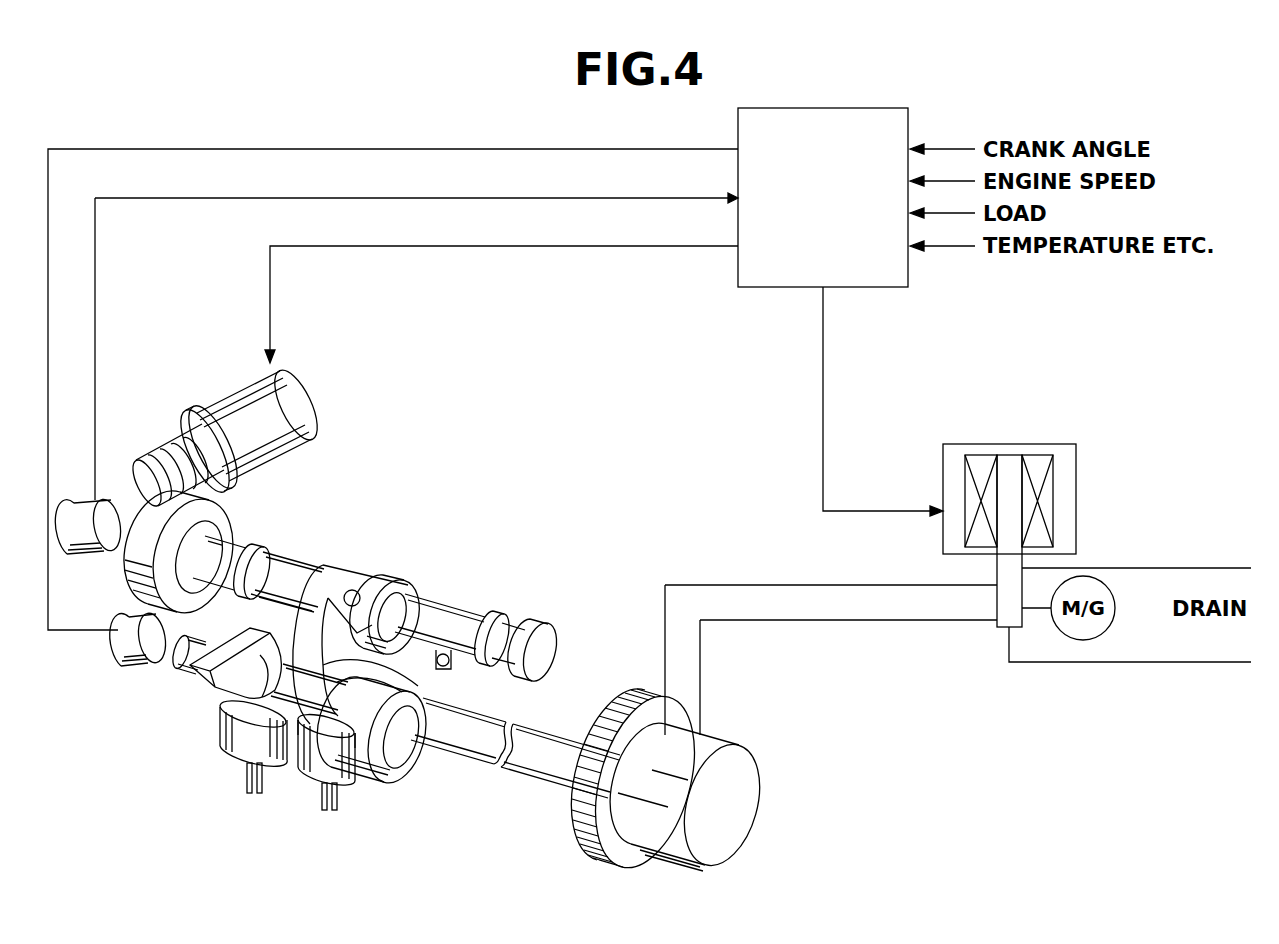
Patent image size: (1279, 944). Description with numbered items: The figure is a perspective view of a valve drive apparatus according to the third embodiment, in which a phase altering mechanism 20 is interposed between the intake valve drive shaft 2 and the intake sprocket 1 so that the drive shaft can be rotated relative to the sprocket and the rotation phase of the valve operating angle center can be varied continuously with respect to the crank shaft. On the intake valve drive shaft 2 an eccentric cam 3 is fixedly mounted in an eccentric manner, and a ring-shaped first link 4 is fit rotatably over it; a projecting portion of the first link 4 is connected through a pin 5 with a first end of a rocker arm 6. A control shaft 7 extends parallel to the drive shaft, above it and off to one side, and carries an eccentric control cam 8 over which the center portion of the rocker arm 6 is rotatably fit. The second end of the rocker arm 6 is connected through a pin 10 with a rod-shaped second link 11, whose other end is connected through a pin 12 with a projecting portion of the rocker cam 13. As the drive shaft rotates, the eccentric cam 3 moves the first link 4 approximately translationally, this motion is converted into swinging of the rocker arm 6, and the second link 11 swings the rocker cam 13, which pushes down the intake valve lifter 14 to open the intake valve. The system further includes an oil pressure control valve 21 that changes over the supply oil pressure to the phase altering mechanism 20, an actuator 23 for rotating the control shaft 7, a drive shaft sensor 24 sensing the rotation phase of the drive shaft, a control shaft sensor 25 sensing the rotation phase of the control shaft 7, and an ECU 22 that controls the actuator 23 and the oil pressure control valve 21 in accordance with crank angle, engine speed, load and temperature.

The intake sprocket 1 is at (592, 835).
The intake valve drive shaft 2 is at (548, 762).
The eccentric cam 3 is at (393, 762).
The first link 4 is at (360, 760).
The pin 5 is at (448, 668).
The rocker arm 6 is at (375, 586).
The control shaft 7 is at (283, 568).
The control cam 8 is at (402, 640).
The pin 10 is at (354, 592).
The second link 11 is at (313, 620).
The pin 12 is at (318, 745).
The rocker cam 13 is at (290, 735).
The intake valve lifter 14 is at (236, 758).
The phase altering mechanism 20 is at (752, 810).
The oil pressure control valve 21 is at (1078, 497).
The ECU 22 is at (887, 290).
The actuator 23 is at (298, 408).
The drive shaft sensor 24 is at (137, 643).
The control shaft sensor 25 is at (103, 507).